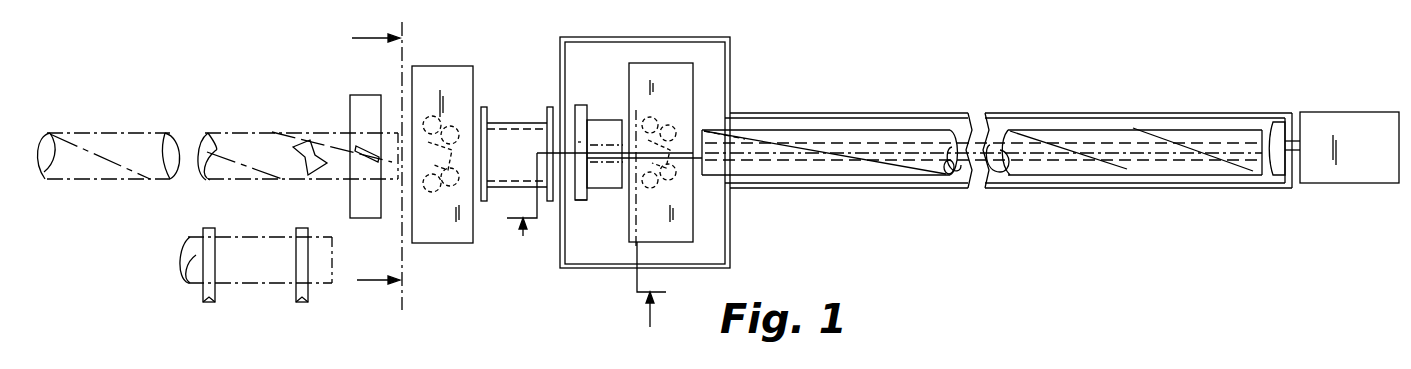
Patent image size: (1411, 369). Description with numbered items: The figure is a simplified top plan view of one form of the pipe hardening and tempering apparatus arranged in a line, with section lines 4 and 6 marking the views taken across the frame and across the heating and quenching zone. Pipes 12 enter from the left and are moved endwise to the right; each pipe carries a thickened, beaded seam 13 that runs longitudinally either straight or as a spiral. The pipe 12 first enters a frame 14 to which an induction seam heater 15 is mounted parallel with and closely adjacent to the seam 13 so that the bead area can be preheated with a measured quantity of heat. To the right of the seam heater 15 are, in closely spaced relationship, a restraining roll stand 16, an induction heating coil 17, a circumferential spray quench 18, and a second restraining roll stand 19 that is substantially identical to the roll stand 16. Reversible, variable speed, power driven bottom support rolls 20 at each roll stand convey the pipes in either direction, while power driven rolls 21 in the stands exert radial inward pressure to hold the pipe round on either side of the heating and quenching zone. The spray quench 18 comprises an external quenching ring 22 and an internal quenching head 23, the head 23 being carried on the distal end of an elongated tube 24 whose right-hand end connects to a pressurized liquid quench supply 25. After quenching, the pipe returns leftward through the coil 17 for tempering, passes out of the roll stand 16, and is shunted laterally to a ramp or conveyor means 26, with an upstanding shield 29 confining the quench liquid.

The section line 4- 4 is at (364, 169).
The section line 6- 6 is at (586, 259).
The pipe 12 is at (163, 130).
The beaded seam 13 is at (220, 130).
The frame 14 is at (363, 95).
The induction seam heater 15 is at (363, 165).
The restraining roll stand 16 is at (449, 49).
The induction heating coil 17 is at (515, 118).
The circumferential spray quench 18 is at (597, 104).
The second restraining roll stand 19 is at (654, 53).
The bottom support rolls 20 is at (883, 163).
The power driven rolls 21 is at (667, 110).
The external quenching ring 22 is at (580, 201).
The internal quenching head 23 is at (592, 162).
The elongated tube 24 is at (997, 157).
The pressurized liquid quench supply source 25 is at (1342, 122).
The ramp or conveyor means 26 is at (202, 290).
The upstanding shield 29 is at (1153, 112).